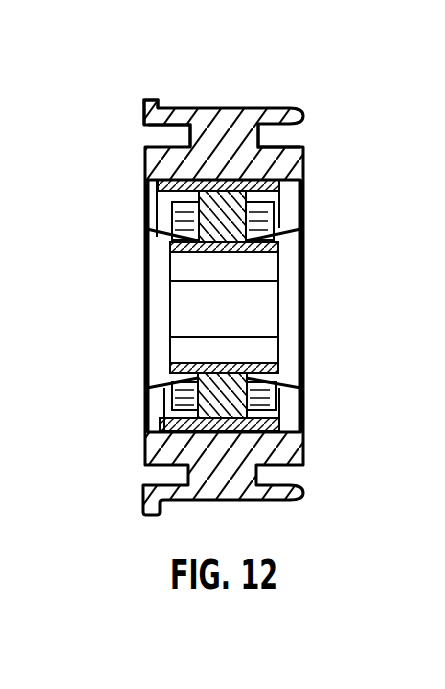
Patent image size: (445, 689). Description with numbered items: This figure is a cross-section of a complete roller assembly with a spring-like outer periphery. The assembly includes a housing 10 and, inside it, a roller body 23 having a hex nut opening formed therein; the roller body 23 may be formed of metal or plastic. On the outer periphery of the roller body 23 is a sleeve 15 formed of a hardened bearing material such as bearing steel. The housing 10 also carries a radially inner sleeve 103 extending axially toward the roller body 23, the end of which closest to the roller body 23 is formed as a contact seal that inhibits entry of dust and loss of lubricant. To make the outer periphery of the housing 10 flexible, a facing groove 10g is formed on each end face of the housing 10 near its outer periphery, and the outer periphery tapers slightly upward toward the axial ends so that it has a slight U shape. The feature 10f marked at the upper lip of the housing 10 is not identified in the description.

The housing 10 is at (300, 447).
The lip of hub 10f is at (166, 107).
The facing groove 10g is at (172, 138).
The sleeve 15 is at (276, 182).
The roller body 23 is at (213, 381).
The radially inner sleeve 103 is at (281, 400).